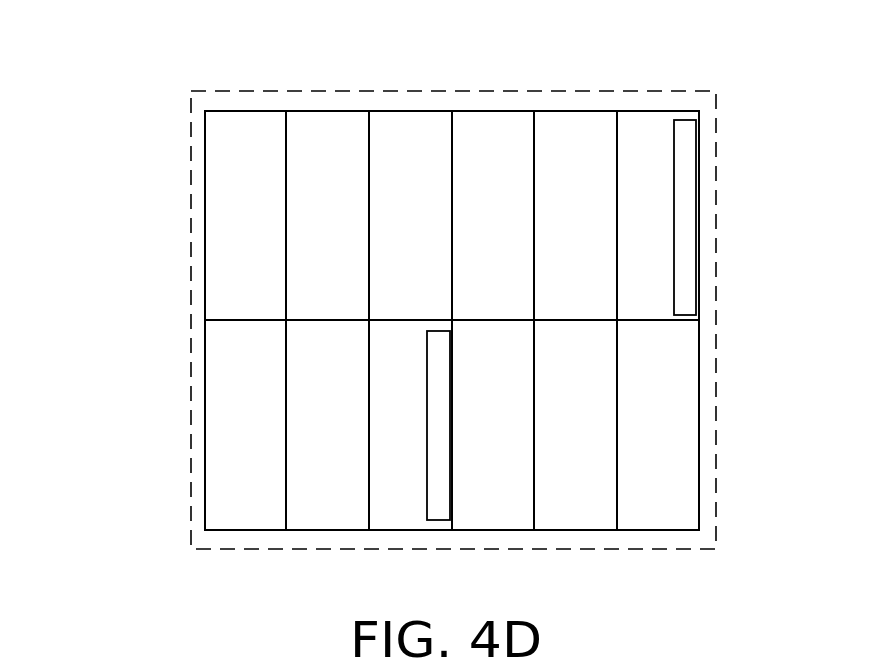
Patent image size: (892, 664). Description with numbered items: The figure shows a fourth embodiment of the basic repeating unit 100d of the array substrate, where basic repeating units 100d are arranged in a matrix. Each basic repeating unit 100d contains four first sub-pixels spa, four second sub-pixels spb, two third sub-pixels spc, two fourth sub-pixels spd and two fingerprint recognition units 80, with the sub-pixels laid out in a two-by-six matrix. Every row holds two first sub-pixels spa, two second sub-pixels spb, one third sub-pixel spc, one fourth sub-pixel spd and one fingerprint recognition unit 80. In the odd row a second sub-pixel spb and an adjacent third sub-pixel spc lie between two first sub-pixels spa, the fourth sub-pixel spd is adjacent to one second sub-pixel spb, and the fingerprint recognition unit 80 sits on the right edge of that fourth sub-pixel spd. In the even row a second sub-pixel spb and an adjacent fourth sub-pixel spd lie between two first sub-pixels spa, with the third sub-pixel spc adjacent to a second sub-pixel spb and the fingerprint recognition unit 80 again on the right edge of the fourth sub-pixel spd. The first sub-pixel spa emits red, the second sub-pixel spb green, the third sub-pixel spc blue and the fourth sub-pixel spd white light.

The basic repeating unit 100d is at (190, 173).
The first sub-pixel spa is at (237, 158).
The second sub-pixel spb is at (332, 158).
The third sub-pixel spc is at (415, 158).
The fourth sub-pixel spd is at (648, 158).
The fingerprint recognition unit 80 is at (686, 177).